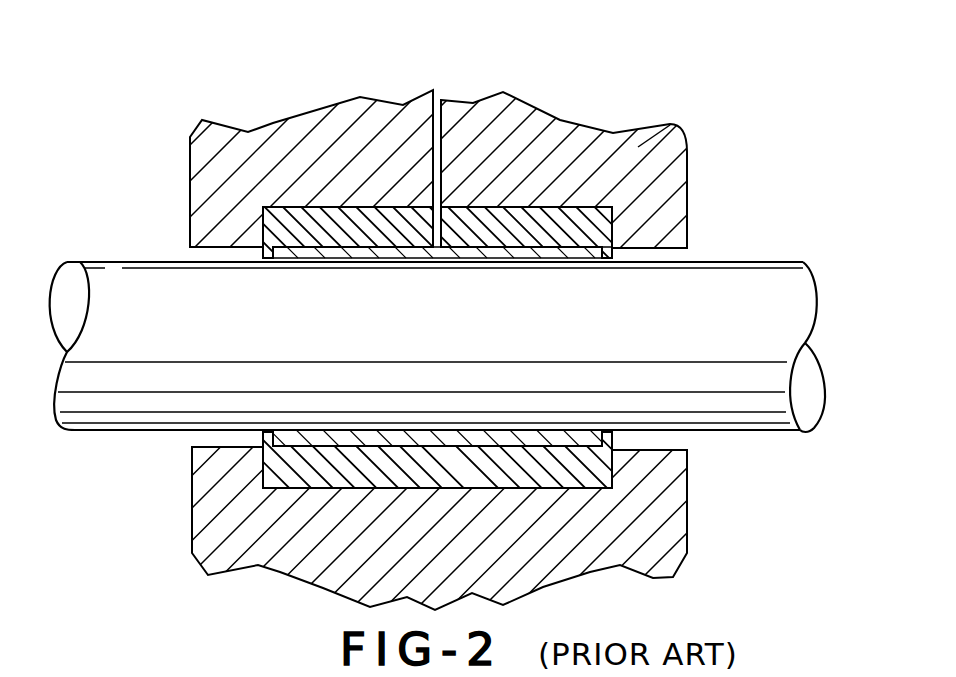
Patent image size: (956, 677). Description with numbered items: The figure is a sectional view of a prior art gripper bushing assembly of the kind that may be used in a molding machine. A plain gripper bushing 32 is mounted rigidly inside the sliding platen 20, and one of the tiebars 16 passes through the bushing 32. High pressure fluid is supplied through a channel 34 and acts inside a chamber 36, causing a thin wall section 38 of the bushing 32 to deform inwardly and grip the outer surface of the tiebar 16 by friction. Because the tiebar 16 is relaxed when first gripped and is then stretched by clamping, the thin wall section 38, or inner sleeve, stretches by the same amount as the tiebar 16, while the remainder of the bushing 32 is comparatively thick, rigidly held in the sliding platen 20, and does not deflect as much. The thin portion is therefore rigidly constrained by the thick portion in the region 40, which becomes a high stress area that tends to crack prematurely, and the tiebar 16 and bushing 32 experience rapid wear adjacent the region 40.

The tiebar 16 is at (770, 313).
The sliding platen 20 is at (637, 147).
The gripper bushing 32 is at (648, 217).
The channel 34 is at (458, 100).
The chamber 36 is at (283, 250).
The thin wall section 38 is at (342, 258).
The region 40 is at (613, 247).